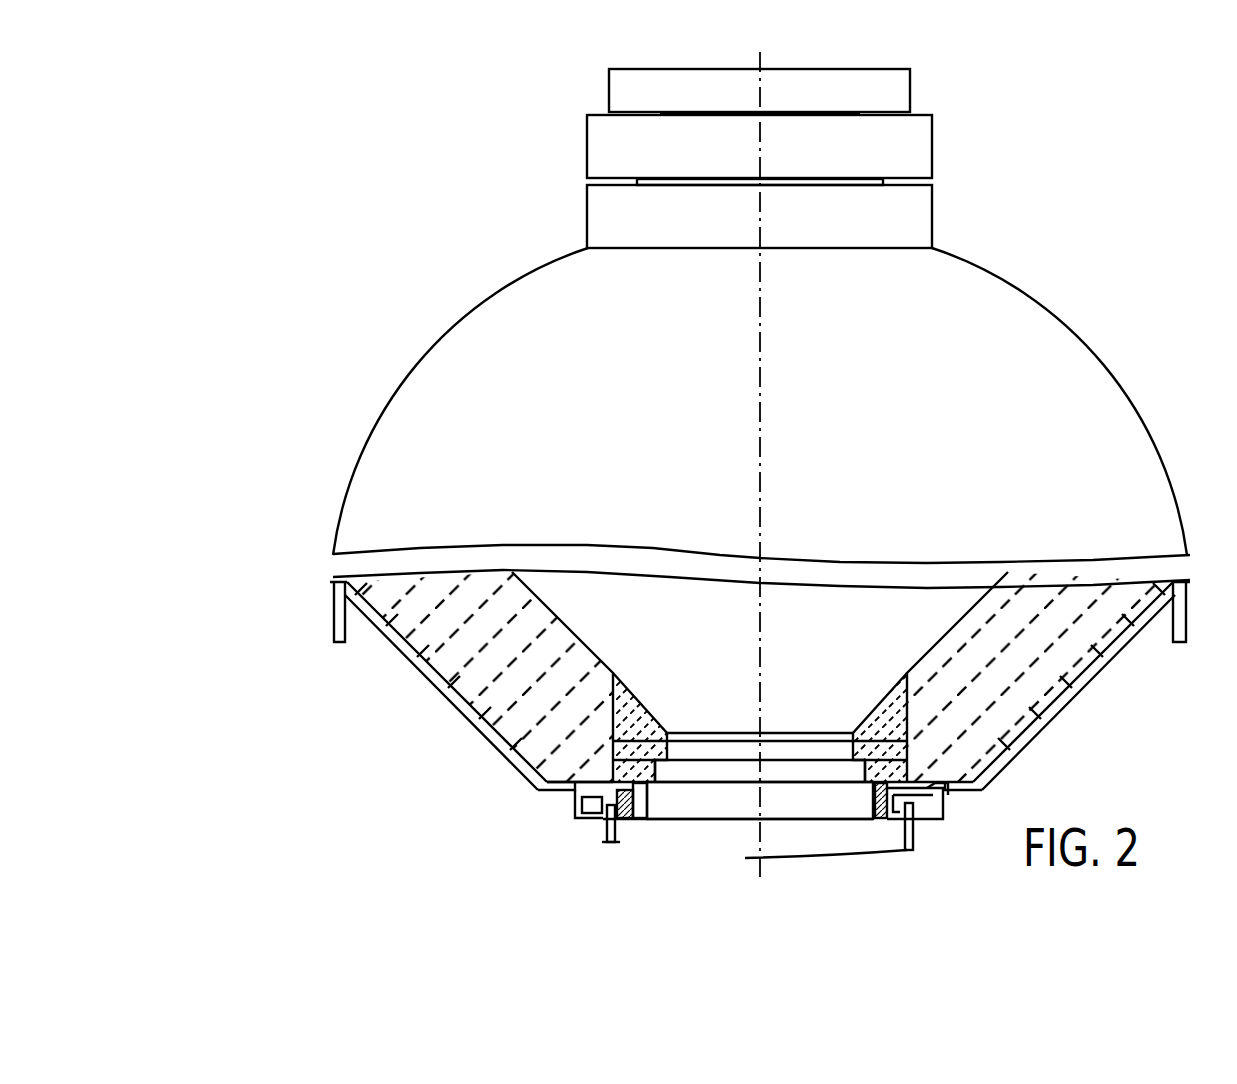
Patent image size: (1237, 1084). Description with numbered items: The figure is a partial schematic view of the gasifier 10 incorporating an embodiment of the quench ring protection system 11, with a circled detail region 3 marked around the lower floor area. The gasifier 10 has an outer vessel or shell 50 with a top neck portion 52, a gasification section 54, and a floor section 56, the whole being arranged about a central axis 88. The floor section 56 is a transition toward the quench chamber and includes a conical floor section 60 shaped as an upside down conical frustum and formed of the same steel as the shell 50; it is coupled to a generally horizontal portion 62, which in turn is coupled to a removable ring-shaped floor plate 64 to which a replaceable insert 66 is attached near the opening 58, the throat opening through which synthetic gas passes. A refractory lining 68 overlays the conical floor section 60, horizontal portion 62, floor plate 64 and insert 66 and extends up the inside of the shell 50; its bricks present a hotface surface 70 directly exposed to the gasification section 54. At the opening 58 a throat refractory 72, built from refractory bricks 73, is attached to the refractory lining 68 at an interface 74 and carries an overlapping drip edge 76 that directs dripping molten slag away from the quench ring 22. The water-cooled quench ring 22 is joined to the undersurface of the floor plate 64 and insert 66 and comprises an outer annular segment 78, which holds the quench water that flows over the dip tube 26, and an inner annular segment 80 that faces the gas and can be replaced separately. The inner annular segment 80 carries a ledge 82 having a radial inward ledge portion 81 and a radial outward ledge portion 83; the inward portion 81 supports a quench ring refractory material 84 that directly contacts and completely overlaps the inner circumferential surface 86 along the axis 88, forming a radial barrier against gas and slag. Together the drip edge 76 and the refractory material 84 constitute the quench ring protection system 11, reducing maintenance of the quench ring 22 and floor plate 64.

The gasifier 10 is at (1052, 224).
The top neck portion 52 is at (932, 217).
The outer vessel or shell 50 is at (1037, 298).
The detail view reference 3 is at (570, 516).
The refractory lining 68 is at (527, 627).
The hotface surface 70 is at (600, 648).
The interface 74 is at (615, 705).
The opening 58 is at (737, 698).
The gasification section 54 is at (847, 633).
The axis 88 is at (762, 645).
The throat refractory 72 is at (680, 721).
The refractory bricks 73 is at (633, 713).
The quench ring protection system 11 is at (747, 747).
The conical floor section 60 is at (443, 697).
The floor section 56 is at (465, 764).
The horizontal portion 62 is at (552, 793).
The removable floor plate 64 is at (571, 796).
The outer annular segment 78 is at (598, 820).
The quench ring 22 is at (600, 820).
The dip tube 26 is at (622, 822).
The radial outward ledge portion 83 is at (625, 825).
The inner annular segment 80 is at (635, 823).
The radial inward ledge portion 81 is at (638, 823).
The ledge 82 is at (637, 822).
The quench ring refractory material 84 is at (642, 817).
The inner circumferential surface 86 is at (643, 800).
The overlapping drip edge 76 is at (680, 746).
The replaceable insert 66 is at (643, 785).